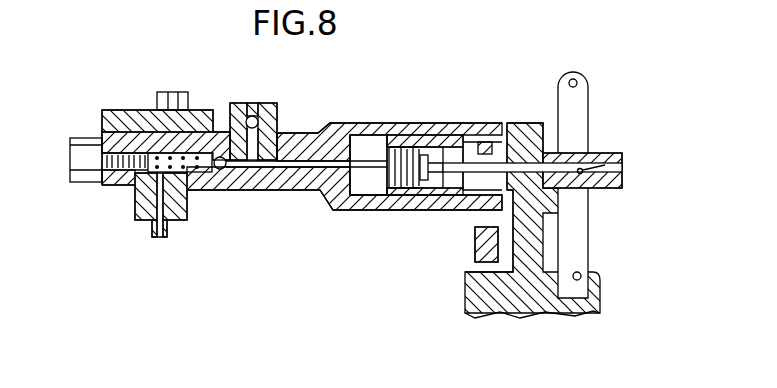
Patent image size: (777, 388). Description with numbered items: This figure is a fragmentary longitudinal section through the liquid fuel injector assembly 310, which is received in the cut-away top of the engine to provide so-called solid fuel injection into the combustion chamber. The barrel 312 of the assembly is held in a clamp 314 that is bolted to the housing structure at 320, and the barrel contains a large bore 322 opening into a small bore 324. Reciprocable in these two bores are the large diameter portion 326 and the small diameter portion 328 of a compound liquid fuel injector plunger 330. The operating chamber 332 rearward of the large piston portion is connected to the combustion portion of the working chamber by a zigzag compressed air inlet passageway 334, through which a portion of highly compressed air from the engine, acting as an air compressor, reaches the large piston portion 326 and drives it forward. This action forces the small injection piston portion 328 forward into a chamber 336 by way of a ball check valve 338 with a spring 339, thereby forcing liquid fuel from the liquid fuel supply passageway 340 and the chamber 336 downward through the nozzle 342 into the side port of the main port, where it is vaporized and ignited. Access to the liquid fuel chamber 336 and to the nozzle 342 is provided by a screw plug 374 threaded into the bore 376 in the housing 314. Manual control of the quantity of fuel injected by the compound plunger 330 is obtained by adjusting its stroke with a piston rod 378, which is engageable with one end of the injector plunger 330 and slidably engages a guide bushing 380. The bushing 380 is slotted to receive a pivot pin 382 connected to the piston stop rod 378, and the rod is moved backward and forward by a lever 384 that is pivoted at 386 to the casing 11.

The casing 11 is at (475, 305).
The injector assembly 310 is at (388, 120).
The barrel 312 is at (272, 190).
The clamp 314 is at (125, 100).
The bolt 320 is at (175, 92).
The large bore 322 is at (478, 140).
The small bore 324 is at (345, 140).
The large diameter portion 326 is at (420, 140).
The small diameter portion 328 is at (295, 140).
The compound liquid fuel injector plunger 330 is at (381, 180).
The operating chamber 332 is at (512, 130).
The compressed air inlet passageway 334 is at (478, 242).
The chamber 336 is at (190, 175).
The ball check valve 338 is at (222, 170).
The spring 339 is at (227, 150).
The liquid fuel supply passageway 340 is at (246, 103).
The nozzle 342 is at (155, 237).
The screw plug 374 is at (74, 140).
The bore 376 is at (115, 185).
The piston rod 378 is at (565, 170).
The guide bushing 380 is at (488, 150).
The pivot pin 382 is at (605, 160).
The lever 384 is at (590, 86).
The pivot 386 is at (582, 276).